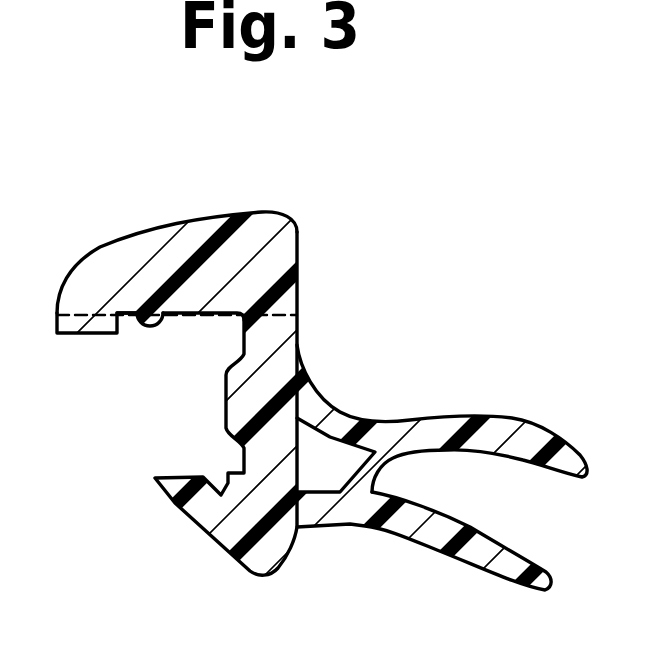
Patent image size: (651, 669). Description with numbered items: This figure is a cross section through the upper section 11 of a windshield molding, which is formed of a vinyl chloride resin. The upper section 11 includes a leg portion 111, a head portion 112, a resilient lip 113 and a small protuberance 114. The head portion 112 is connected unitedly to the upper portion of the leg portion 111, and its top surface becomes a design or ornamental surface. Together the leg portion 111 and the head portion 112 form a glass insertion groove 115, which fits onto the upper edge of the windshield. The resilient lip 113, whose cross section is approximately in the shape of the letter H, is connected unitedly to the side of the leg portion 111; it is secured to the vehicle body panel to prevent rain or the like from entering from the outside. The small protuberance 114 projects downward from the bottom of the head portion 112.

The upper section 11 is at (317, 234).
The leg portion 111 is at (292, 360).
The head portion 112 is at (236, 247).
The resilient lip 113 is at (442, 425).
The small protuberance 114 is at (97, 330).
The glass insertion groove 115 is at (139, 314).